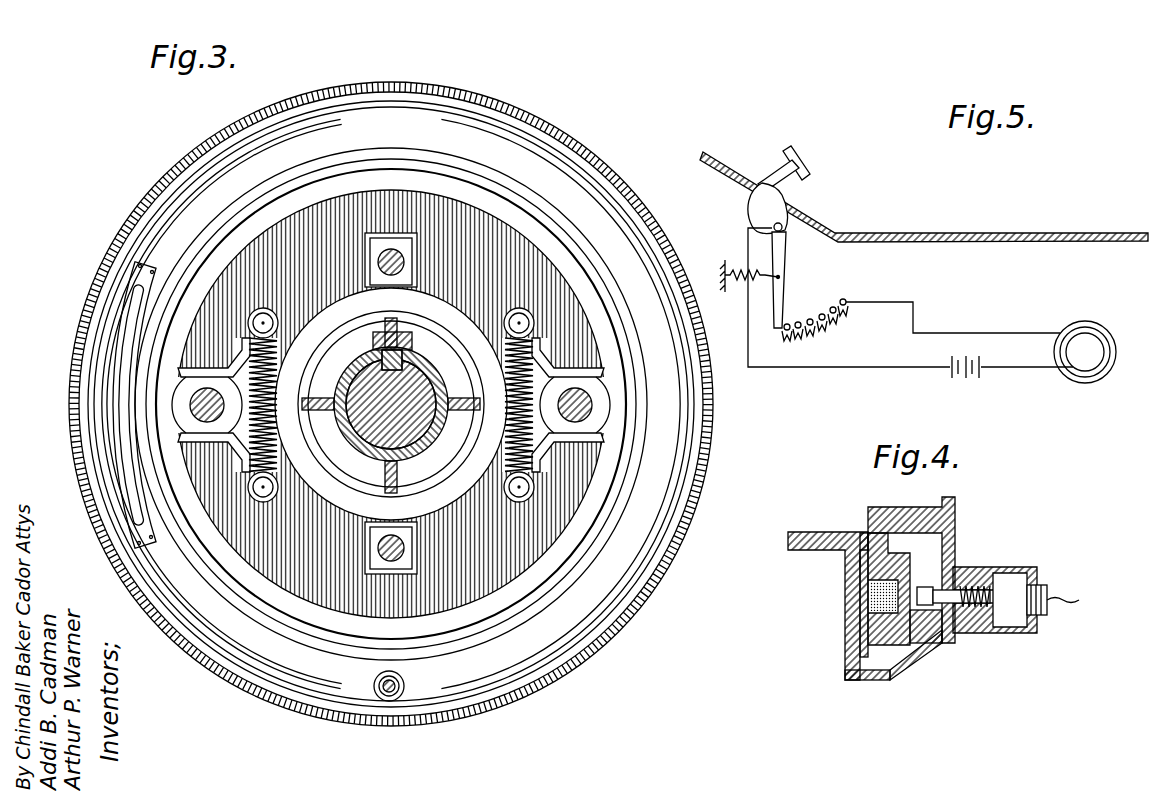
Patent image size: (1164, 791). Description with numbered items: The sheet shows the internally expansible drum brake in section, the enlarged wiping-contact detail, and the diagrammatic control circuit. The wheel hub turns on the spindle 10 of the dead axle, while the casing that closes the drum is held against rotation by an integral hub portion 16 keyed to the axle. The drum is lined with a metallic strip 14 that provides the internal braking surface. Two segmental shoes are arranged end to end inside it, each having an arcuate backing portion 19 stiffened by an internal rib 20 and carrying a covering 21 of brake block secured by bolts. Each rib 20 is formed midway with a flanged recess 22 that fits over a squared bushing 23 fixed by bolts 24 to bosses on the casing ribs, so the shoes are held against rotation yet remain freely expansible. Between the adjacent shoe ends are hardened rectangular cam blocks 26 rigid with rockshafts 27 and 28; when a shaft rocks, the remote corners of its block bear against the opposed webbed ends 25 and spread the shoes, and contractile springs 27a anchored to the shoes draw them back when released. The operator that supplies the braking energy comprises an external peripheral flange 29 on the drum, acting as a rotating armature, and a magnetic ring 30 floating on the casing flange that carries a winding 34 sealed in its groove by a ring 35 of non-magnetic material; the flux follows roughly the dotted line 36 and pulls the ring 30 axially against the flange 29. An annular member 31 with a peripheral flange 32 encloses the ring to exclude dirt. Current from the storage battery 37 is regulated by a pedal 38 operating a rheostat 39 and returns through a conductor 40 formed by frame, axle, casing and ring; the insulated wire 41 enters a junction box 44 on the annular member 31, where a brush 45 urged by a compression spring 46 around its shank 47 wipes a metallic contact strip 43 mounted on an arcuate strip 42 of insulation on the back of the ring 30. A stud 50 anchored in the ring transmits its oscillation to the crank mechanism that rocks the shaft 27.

In FIG. 3, the spindle 10 is at (418, 420).
In FIG. 3, the strip 14 is at (505, 195).
In FIG. 3, the hub portion 16 is at (422, 360).
In FIG. 3, the arcuate backing portion 19 is at (318, 202).
In FIG. 3, the internal rib 20 is at (391, 404).
In FIG. 3, the covering 21 is at (268, 207).
In FIG. 3, the flanged recess 22 is at (388, 240).
In FIG. 3, the squared bushing 23 is at (380, 276).
In FIG. 3, the bolts 24 is at (383, 526).
In FIG. 3, the webbed ends 25 is at (204, 377).
In FIG. 3, the cam blocks 26 is at (228, 428).
In FIG. 3, the rockshaft 27 is at (580, 397).
In FIG. 3, the contractile springs 27a is at (278, 340).
In FIG. 3, the rockshaft 28 is at (207, 405).
In FIG. 4, the external peripheral flange 29 is at (845, 648).
In FIG. 3, the ring 30 is at (170, 568).
In FIG. 4, the ring 30 is at (860, 657).
In FIG. 4, the annular member 31 is at (955, 558).
In FIG. 4, the peripheral flange 32 is at (872, 682).
In FIG. 5, the winding 34 is at (1112, 338).
In FIG. 4, the winding 34 is at (867, 591).
In FIG. 4, the ring of non-magnetic material 35 is at (860, 617).
In FIG. 4, the dotted line 36 is at (860, 562).
In FIG. 5, the storage battery 37 is at (958, 380).
In FIG. 5, the pedal 38 is at (775, 172).
In FIG. 5, the rheostat 39 is at (847, 341).
In FIG. 5, the conductor 40 is at (1035, 369).
In FIG. 5, the wire 41 is at (993, 333).
In FIG. 4, the wire 41 is at (1077, 601).
In FIG. 3, the arcuate strip 42 is at (140, 274).
In FIG. 4, the arcuate strip 42 is at (908, 665).
In FIG. 3, the contact strip 43 is at (128, 304).
In FIG. 4, the contact strip 43 is at (920, 612).
In FIG. 4, the junction box 44 is at (993, 633).
In FIG. 4, the brush 45 is at (930, 587).
In FIG. 4, the compression spring 46 is at (977, 620).
In FIG. 4, the shank 47 is at (998, 595).
In FIG. 3, the stud 50 is at (390, 700).